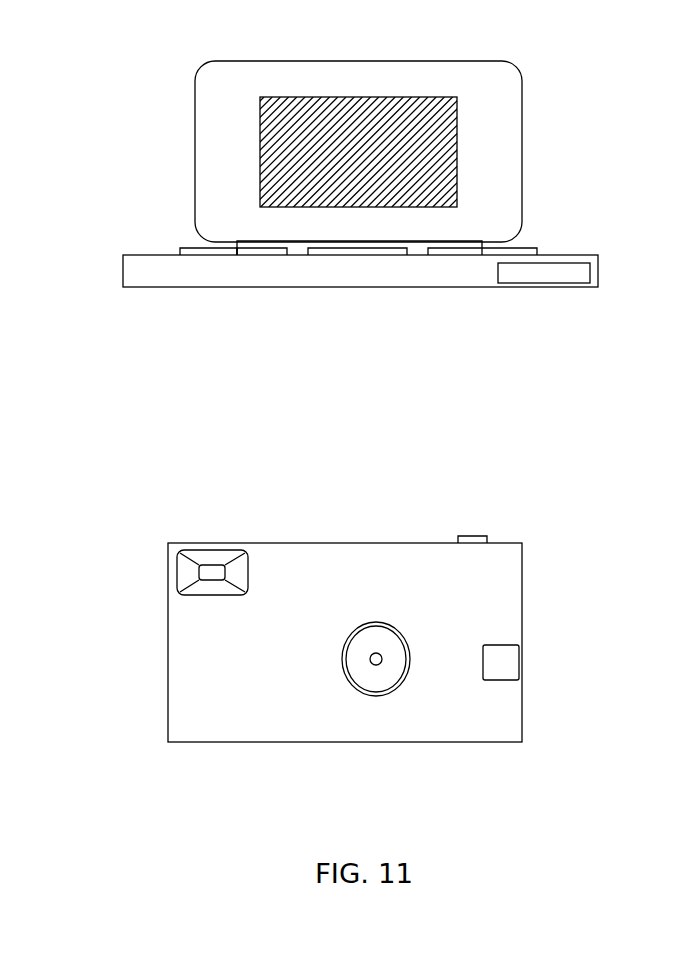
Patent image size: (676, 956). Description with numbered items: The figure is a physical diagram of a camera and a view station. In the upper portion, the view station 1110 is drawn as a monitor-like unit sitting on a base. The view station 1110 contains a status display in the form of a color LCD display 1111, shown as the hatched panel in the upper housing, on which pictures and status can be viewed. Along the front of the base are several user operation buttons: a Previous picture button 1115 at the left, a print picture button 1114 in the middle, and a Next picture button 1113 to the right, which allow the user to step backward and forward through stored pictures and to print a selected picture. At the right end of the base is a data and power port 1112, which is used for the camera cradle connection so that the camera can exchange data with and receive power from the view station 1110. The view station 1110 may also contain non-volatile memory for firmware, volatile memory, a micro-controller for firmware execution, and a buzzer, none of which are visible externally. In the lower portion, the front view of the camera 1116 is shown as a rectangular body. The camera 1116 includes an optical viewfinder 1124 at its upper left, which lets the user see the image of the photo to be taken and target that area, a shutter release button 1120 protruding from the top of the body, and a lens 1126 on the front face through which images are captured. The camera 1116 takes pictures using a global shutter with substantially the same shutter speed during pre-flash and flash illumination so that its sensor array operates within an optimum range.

The view station 1110 is at (97, 46).
The color LCD display 1111 is at (420, 197).
The data and power port 1112 is at (543, 272).
The Next picture button 1113 is at (482, 254).
The print picture button 1114 is at (360, 253).
The Previous picture button 1115 is at (232, 253).
The camera 1116 is at (155, 501).
The shutter release button 1120 is at (540, 500).
The optical viewfinder 1124 is at (212, 572).
The lens 1126 is at (383, 657).